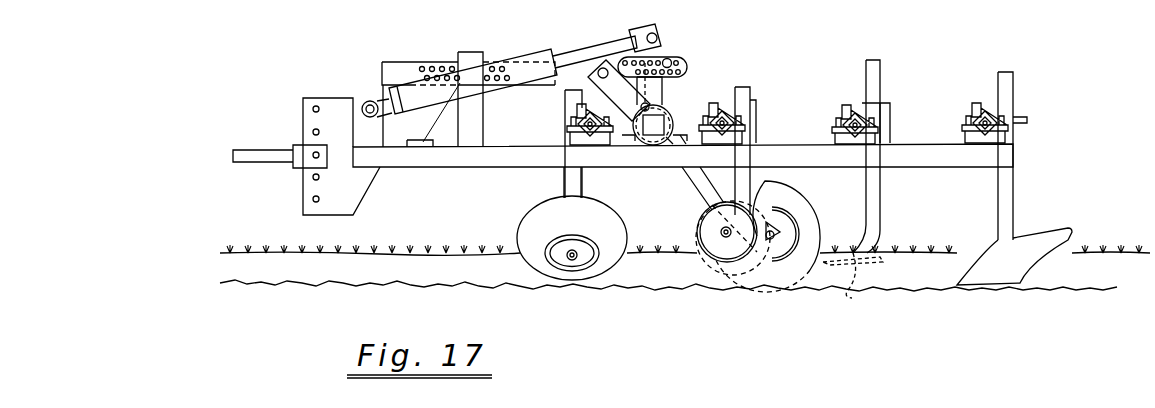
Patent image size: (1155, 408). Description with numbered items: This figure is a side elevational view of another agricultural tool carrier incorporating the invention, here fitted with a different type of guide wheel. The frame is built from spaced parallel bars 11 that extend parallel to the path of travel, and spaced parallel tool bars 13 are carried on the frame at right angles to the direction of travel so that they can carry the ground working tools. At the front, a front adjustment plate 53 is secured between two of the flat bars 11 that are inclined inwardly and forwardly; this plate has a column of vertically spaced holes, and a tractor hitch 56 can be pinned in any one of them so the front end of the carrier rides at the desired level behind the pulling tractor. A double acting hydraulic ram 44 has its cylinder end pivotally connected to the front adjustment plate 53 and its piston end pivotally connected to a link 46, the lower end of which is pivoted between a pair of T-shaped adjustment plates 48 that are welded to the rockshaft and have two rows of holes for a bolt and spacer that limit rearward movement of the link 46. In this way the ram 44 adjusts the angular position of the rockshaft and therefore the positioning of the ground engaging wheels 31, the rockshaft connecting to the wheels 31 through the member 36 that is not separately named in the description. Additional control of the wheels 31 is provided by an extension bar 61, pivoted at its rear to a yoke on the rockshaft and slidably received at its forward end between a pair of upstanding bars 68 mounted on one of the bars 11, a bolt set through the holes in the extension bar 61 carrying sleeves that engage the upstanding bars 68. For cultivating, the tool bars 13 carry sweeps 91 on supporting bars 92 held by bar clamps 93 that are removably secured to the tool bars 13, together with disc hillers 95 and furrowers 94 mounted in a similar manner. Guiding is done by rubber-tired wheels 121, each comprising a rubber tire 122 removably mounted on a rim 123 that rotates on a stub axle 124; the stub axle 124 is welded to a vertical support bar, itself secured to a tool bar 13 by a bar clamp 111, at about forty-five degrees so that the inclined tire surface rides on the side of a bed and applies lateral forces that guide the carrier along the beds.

The bar 11 is at (468, 168).
The tool bar 13 is at (722, 127).
The ground engaging wheel 31 is at (820, 195).
The arm 36 is at (706, 188).
The hydraulic ram 44 is at (426, 102).
The link 46 is at (660, 52).
The T-shaped adjustment plate 48 is at (662, 80).
The front adjustment plate 53 is at (346, 138).
The tractor hitch 56 is at (266, 156).
The extension bar 61 is at (411, 62).
The upstanding bar 68 is at (470, 125).
The sweep 91 is at (853, 279).
The supporting bar 92 is at (884, 192).
The bar clamp 93 is at (893, 110).
The furrower 94 is at (1052, 238).
The disc hiller 95 is at (697, 228).
The bar clamp 111 is at (572, 101).
The rubber-tired wheel 121 is at (588, 236).
The rubber tire 122 is at (542, 212).
The rim 123 is at (578, 265).
The stub axle 124 is at (569, 258).